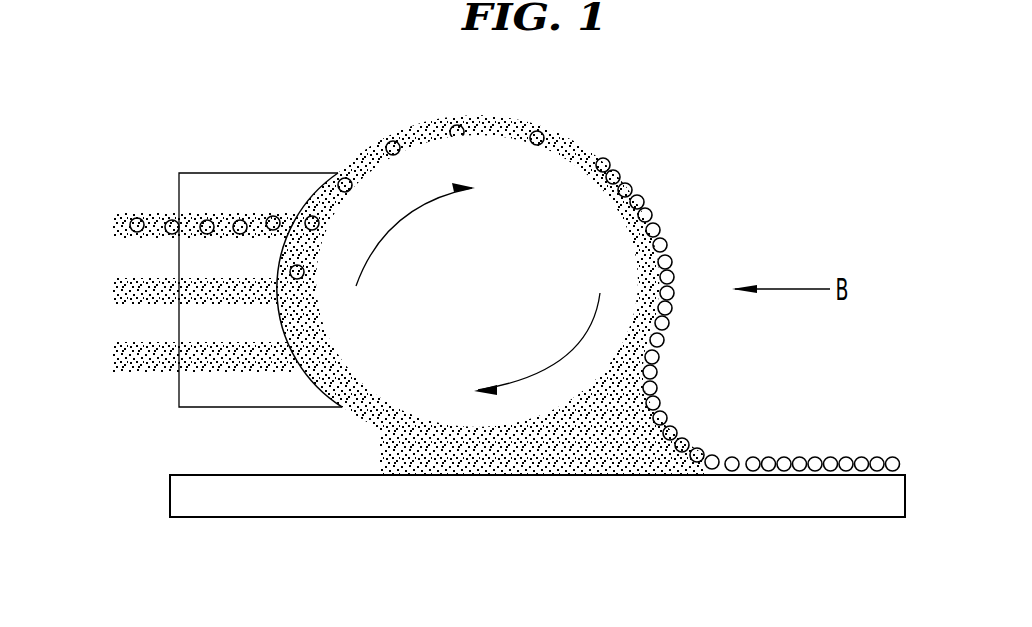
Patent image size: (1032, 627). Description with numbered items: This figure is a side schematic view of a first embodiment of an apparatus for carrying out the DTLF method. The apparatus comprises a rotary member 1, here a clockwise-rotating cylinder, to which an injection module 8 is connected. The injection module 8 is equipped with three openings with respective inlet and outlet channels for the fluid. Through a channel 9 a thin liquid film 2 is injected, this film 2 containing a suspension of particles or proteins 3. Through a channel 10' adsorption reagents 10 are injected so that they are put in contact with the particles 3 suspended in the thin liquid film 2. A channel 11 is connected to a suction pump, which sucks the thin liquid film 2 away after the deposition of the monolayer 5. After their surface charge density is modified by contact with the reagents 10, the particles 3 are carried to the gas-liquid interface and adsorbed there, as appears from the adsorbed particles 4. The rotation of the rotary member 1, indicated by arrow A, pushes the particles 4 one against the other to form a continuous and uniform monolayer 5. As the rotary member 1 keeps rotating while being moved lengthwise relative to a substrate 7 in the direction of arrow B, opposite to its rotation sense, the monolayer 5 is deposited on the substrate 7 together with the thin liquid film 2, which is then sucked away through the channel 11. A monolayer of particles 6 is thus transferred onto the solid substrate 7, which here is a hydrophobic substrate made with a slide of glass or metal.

The rotary member 1 is at (555, 195).
The thin liquid film 2 is at (370, 167).
The particles or proteins 3 is at (393, 141).
The adsorbed particles 4 is at (537, 131).
The monolayer 5 is at (643, 197).
The monolayer of particles 6 is at (817, 457).
The substrate 7 is at (815, 500).
The injection module 8 is at (215, 187).
The channel 9 is at (154, 216).
The adsorption reagents 10 is at (164, 293).
The channel 10' is at (120, 256).
The channel connected to a suction pump 11 is at (125, 345).